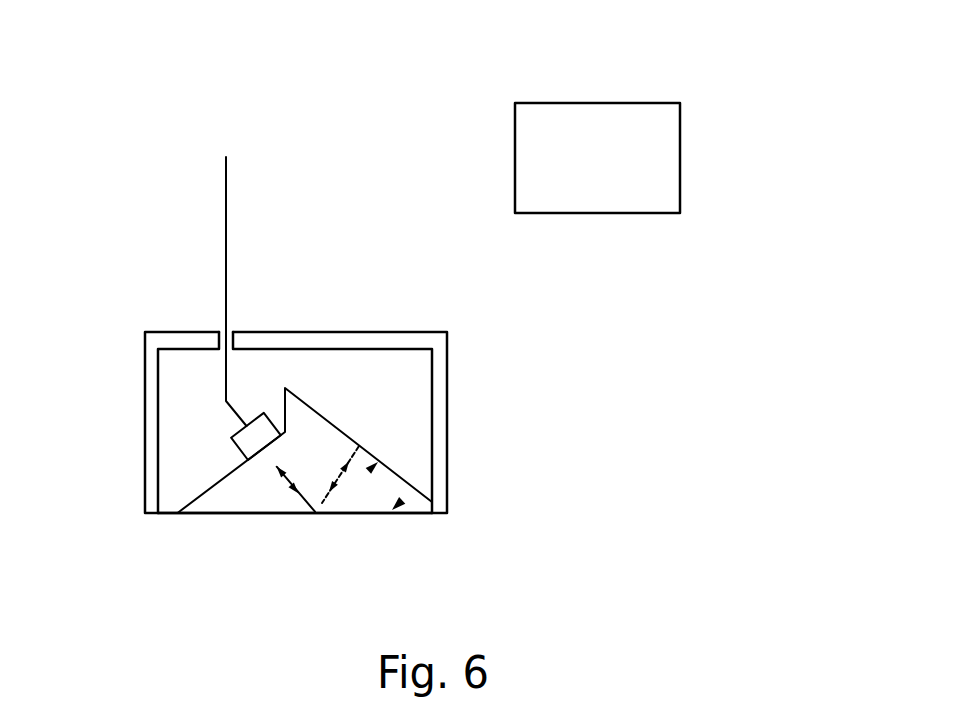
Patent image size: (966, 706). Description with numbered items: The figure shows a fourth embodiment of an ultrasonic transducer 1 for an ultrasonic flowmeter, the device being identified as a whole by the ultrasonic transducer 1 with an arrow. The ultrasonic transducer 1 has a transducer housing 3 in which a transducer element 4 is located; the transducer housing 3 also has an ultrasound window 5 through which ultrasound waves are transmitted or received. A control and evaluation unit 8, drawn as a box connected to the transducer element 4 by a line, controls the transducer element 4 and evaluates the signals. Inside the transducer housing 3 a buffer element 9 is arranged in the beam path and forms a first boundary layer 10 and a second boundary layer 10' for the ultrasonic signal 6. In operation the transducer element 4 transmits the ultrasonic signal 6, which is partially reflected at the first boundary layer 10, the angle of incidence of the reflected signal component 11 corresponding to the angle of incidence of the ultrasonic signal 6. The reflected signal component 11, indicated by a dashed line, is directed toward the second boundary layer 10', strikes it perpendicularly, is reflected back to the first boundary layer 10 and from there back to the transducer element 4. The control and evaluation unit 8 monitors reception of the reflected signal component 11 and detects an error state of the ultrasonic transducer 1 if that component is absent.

The ultrasonic transducer 1 is at (101, 72).
The transducer housing 3 is at (440, 363).
The transducer element 4 is at (248, 447).
The ultrasound window 5 is at (168, 520).
The ultrasonic signal 6 is at (242, 471).
The control and evaluation unit 8 is at (655, 180).
The buffer element 9 is at (377, 486).
The first boundary layer 10 is at (611, 503).
The second boundary layer 10' is at (385, 550).
The reflected signal component 11 is at (322, 503).